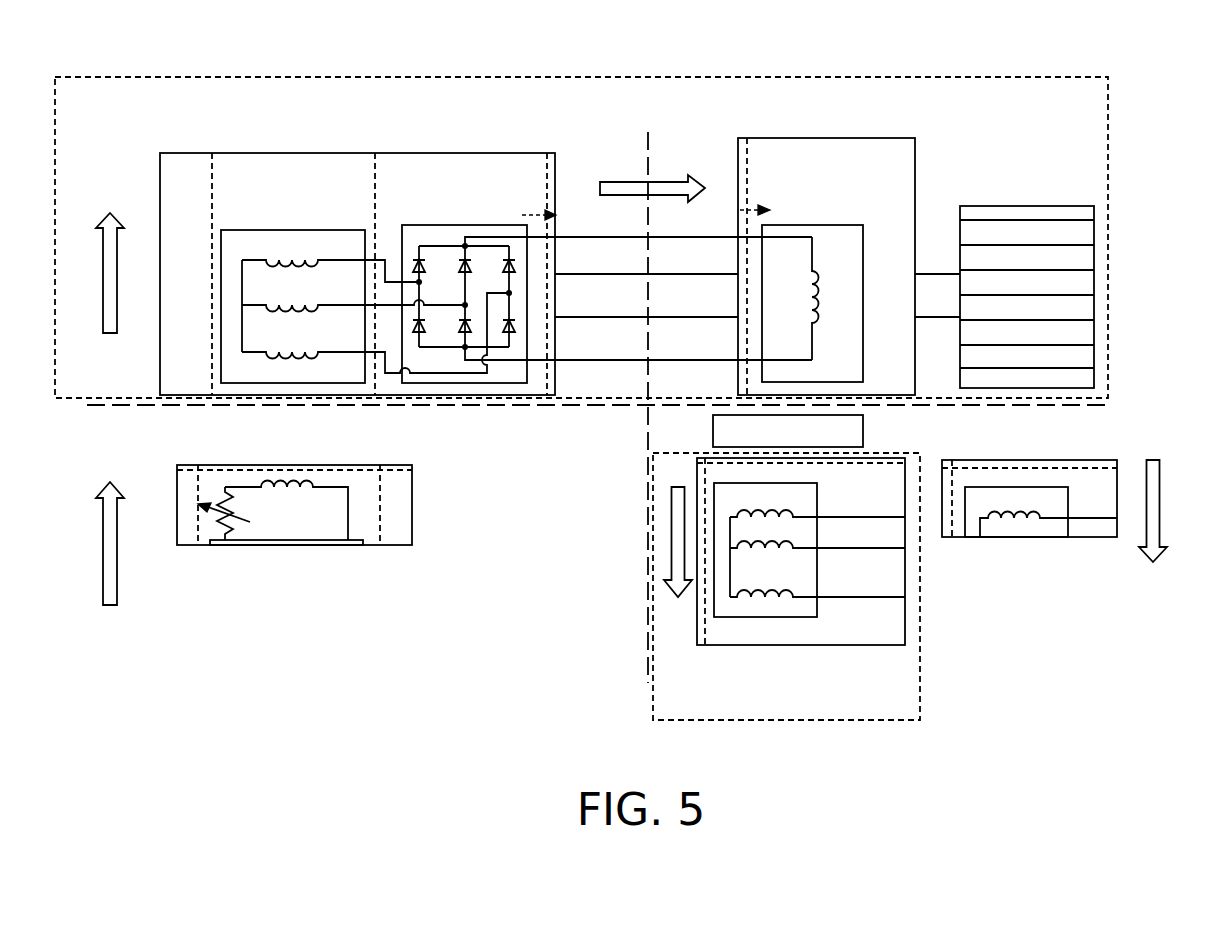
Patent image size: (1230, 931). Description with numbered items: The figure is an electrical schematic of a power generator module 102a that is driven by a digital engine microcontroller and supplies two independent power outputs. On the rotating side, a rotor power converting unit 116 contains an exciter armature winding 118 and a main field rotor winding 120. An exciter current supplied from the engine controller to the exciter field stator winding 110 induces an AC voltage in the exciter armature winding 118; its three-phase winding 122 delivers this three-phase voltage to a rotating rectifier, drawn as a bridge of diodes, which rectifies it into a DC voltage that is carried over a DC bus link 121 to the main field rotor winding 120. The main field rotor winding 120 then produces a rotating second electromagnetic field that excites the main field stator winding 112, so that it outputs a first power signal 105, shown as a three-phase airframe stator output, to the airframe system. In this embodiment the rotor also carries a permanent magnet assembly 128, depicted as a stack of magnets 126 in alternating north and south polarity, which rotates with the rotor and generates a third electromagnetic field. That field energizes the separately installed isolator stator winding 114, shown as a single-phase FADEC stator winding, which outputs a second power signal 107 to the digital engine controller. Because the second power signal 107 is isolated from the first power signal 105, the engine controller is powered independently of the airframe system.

The power generator module 102a is at (238, 659).
The first power signal 105 is at (670, 547).
The second power signal 107 is at (1160, 522).
The exciter field stator winding 110 is at (412, 501).
The main field stator winding 112 is at (889, 722).
The isolator stator winding 114 is at (1090, 538).
The rotor power converting unit 116 is at (316, 75).
The exciter armature winding 118 is at (436, 153).
The main field rotor winding 120 is at (221, 272).
The DC bus link 121 is at (585, 237).
The three-phase winding 122 is at (495, 224).
The magnets 126 is at (713, 432).
The rotor permanent magnet assembly 128 is at (1095, 236).